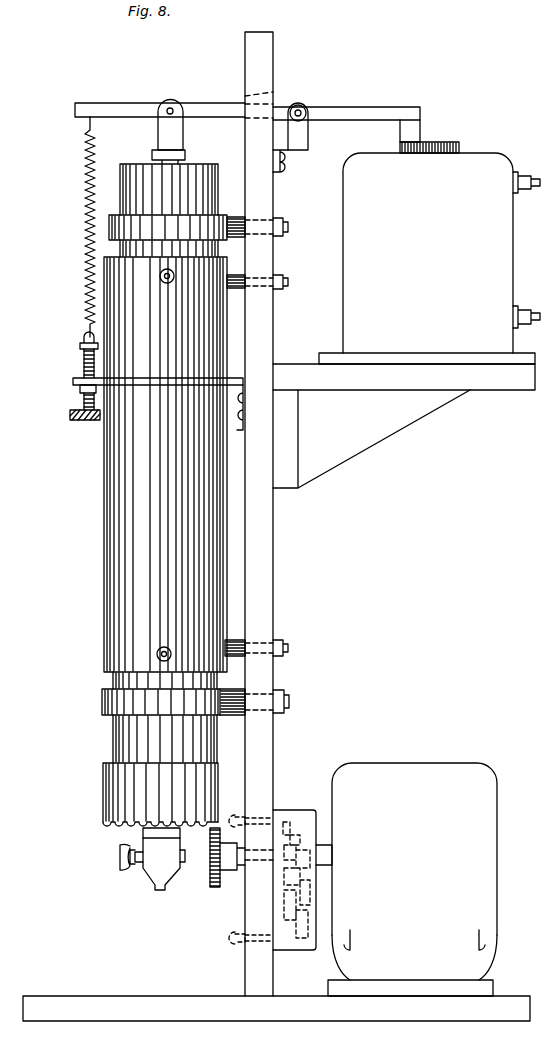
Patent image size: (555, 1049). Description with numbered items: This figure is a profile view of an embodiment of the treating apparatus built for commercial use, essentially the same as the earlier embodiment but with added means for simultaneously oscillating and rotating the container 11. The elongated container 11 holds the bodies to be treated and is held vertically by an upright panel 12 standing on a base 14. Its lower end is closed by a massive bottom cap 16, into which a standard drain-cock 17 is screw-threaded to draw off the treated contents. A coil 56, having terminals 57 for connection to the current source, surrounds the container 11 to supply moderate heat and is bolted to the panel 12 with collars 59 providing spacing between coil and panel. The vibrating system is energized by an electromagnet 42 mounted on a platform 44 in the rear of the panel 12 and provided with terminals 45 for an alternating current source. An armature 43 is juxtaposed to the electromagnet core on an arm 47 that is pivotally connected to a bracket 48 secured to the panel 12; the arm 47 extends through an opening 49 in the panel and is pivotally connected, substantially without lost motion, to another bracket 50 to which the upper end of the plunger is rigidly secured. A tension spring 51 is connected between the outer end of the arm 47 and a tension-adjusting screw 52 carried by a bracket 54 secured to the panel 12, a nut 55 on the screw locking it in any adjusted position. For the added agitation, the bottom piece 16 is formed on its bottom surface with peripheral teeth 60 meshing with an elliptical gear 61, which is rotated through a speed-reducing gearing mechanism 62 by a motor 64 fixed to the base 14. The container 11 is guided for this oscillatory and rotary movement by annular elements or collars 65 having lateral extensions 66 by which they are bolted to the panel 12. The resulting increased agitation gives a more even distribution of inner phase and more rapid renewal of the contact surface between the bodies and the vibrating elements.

The container 11 is at (113, 736).
The upright panel 12 is at (260, 580).
The base 14 is at (286, 1021).
The bottom cap 16 is at (148, 807).
The drain-cock 17 is at (150, 873).
The electromagnet 42 is at (482, 162).
The armature 43 is at (420, 130).
The platform 44 is at (374, 388).
The terminals 45 is at (532, 192).
The arm 47 is at (358, 107).
The bracket 48 is at (297, 140).
The opening 49 is at (282, 96).
The bracket 50 is at (180, 135).
The tension spring 51 is at (86, 233).
The tension-adjusting screw 52 is at (86, 420).
The bracket 54 is at (141, 386).
The nut 55 is at (80, 388).
The coil 56 is at (104, 520).
The terminals 57 is at (160, 277).
The collars 59 is at (238, 290).
The peripheral teeth 60 is at (112, 827).
The elliptical gear 61 is at (215, 888).
The speed-reducing gearing mechanism 62 is at (294, 812).
The motor 64 is at (409, 766).
The collars 65 is at (110, 216).
The lateral extensions 66 is at (238, 217).